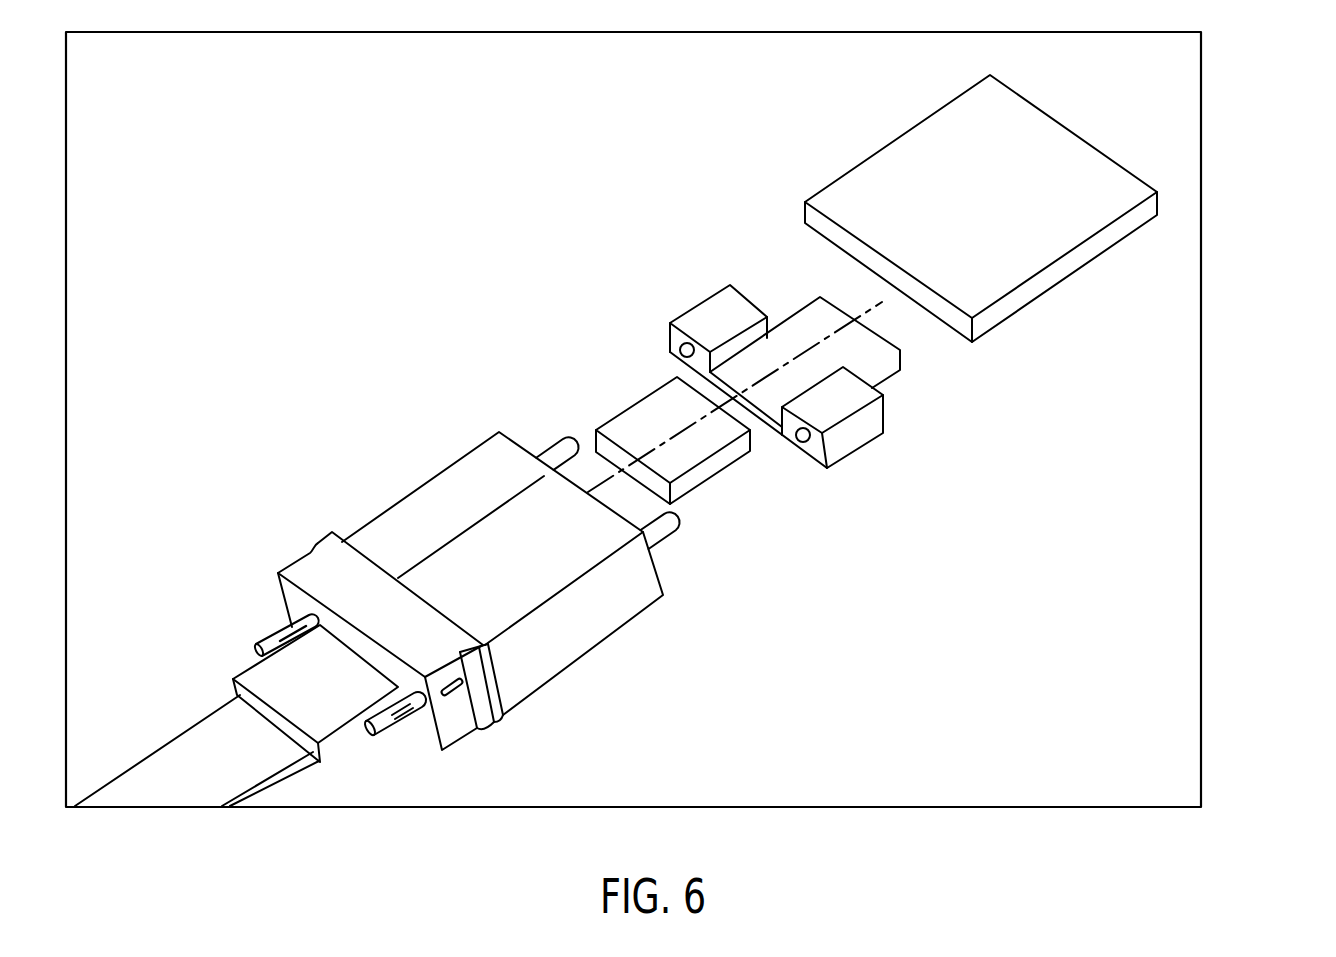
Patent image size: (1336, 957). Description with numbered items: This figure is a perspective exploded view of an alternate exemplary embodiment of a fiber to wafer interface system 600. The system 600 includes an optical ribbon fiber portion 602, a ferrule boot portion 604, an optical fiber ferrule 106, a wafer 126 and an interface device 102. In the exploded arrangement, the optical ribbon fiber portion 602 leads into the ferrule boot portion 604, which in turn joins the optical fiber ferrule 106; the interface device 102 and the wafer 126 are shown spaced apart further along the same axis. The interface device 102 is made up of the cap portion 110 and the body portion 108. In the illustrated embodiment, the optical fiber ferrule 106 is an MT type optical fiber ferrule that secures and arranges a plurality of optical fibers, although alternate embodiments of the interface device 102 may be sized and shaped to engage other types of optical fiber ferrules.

The fiber to wafer interface system 600 is at (1230, 80).
The optical ribbon fiber portion 602 is at (270, 763).
The ferrule boot portion 604 is at (340, 740).
The optical fiber ferrule 106 is at (453, 729).
The cap portion 110 is at (712, 470).
The interface device 102 is at (797, 421).
The body portion 108 is at (854, 480).
The wafer 126 is at (1090, 250).